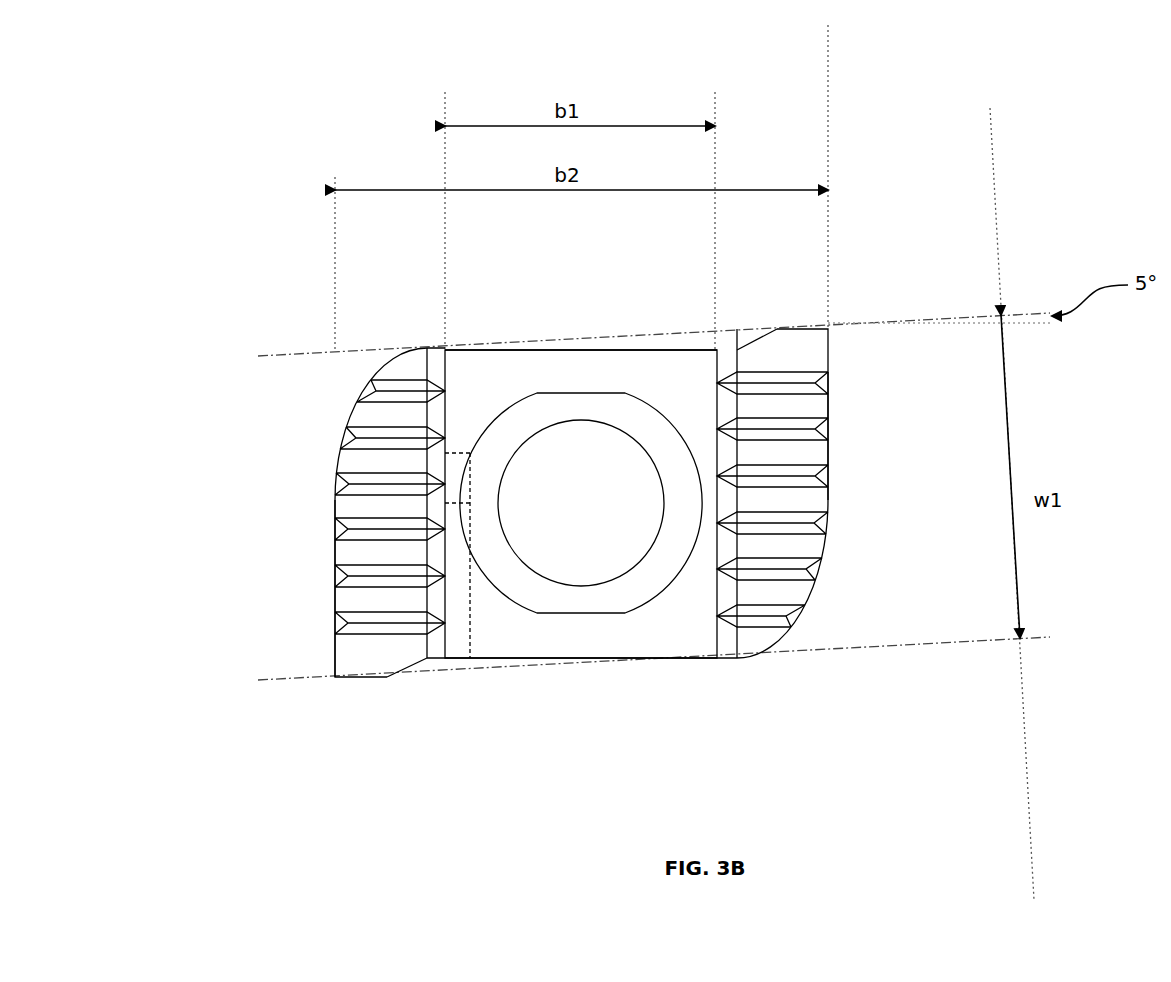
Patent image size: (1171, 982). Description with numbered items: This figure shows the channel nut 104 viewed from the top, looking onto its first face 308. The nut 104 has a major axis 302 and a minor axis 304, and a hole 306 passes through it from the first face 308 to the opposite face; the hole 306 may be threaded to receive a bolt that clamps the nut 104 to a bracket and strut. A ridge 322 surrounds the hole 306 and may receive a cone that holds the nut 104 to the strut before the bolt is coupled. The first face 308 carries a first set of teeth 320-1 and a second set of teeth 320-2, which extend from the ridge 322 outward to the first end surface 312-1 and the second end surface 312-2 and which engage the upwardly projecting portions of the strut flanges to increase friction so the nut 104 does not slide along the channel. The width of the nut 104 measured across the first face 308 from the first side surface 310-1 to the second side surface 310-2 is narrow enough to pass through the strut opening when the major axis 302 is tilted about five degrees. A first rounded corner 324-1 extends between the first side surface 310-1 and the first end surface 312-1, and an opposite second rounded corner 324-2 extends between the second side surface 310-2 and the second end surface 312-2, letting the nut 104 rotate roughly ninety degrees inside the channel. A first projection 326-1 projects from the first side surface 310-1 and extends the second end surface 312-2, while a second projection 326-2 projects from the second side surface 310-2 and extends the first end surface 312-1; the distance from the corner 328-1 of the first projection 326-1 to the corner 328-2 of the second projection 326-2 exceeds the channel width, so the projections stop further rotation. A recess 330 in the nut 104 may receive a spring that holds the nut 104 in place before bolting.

The channel nut 104 is at (238, 113).
The major axis 302 is at (884, 498).
The minor axis 304 is at (593, 715).
The hole 306 is at (581, 503).
The first face 308 is at (475, 378).
The first side surface 310-1 is at (503, 658).
The second side surface 310-2 is at (655, 345).
The first end surface 312-1 is at (830, 402).
The second end surface 312-2 is at (334, 603).
The first set of teeth 320-1 is at (355, 437).
The second set of teeth 320-2 is at (790, 568).
The ridge 322 is at (532, 407).
The first rounded corner 324-1 is at (770, 645).
The second rounded corner 324-2 is at (398, 365).
The first projection 326-1 is at (364, 660).
The second projection 326-2 is at (783, 340).
The corner of first projection 328-1 is at (335, 677).
The corner of second projection 328-2 is at (828, 330).
The recess 330 is at (458, 640).